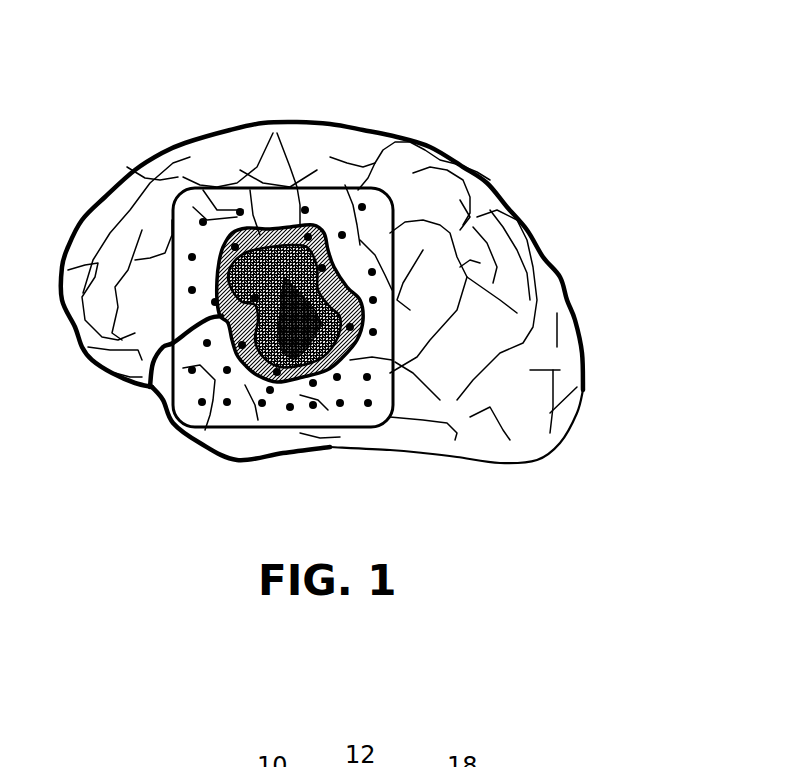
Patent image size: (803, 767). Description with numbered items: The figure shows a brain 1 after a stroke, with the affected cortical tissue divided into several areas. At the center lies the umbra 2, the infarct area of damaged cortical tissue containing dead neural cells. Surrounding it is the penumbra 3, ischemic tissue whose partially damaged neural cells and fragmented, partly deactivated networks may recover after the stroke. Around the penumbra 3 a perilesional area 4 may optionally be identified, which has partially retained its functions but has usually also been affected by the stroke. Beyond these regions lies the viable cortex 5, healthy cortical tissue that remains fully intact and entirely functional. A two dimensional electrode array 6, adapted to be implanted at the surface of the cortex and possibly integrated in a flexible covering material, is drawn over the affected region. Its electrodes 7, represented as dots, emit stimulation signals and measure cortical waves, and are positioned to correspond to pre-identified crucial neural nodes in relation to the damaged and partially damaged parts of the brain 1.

The brain 1 is at (146, 108).
The umbra 2 is at (282, 337).
The penumbra 3 is at (222, 261).
The perilesional area 4 is at (276, 222).
The viable cortex 5 is at (363, 248).
The electrode array 6 is at (343, 430).
The electrodes 7 is at (373, 300).